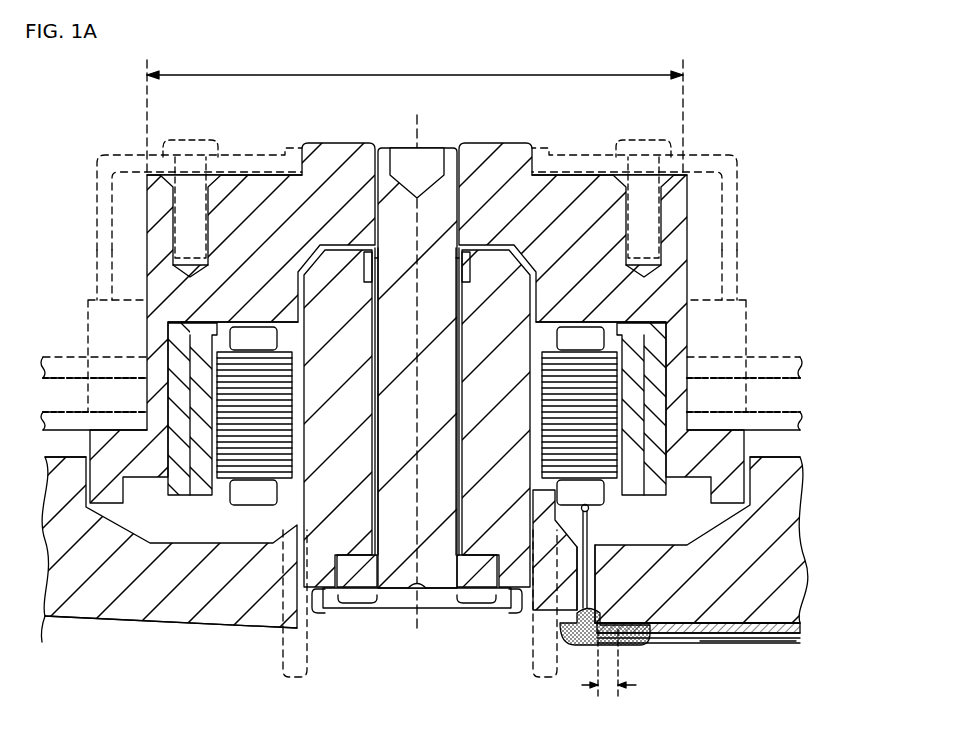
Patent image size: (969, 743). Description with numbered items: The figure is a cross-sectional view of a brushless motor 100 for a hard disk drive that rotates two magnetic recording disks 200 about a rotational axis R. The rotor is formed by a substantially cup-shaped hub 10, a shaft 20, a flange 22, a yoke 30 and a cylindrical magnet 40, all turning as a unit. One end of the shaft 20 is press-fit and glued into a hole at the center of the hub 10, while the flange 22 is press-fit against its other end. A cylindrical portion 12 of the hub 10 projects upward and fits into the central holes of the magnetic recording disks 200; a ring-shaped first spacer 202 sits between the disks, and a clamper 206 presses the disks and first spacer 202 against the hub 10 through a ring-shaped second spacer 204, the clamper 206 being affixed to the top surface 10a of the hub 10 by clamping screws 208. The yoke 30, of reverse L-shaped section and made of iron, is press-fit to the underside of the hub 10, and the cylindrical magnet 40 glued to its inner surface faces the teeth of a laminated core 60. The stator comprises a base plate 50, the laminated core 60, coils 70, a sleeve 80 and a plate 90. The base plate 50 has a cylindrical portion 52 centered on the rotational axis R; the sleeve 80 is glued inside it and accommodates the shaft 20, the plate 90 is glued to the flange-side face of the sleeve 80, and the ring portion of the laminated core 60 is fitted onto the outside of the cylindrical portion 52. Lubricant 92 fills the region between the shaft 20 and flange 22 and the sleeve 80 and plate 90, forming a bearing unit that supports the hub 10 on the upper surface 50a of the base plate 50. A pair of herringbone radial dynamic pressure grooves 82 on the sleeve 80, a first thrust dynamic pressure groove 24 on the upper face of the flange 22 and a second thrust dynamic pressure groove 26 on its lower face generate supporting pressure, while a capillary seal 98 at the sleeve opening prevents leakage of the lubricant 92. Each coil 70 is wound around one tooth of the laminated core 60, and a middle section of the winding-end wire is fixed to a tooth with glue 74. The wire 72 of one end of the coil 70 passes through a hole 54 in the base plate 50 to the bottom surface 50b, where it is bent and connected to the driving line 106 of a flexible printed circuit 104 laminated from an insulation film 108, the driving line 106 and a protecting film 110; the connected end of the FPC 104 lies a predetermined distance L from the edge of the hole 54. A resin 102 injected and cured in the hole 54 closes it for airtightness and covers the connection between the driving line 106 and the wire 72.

The hub 10 is at (333, 143).
The top surface of the hub 10a is at (246, 173).
The cylindrical portion of the hub 12 is at (297, 75).
The shaft 20 is at (390, 145).
The flange 22 is at (388, 580).
The first thrust dynamic pressure groove 24 is at (377, 551).
The second thrust dynamic pressure groove 26 is at (358, 604).
The yoke 30 is at (200, 352).
The cylindrical magnet 40 is at (175, 330).
The base plate 50 is at (62, 484).
The upper surface of the base plate 50a is at (78, 456).
The bottom surface of the base plate 50b is at (146, 623).
The cylindrical portion of the base plate 52 is at (283, 681).
The hole 54 is at (592, 579).
The laminated core 60 is at (228, 472).
The coils 70 is at (245, 330).
The wire of one end of the coil 72 is at (590, 547).
The glue 74 is at (589, 510).
The sleeve 80 is at (318, 613).
The radial dynamic pressure grooves 82 is at (382, 316).
The plate 90 is at (468, 600).
The lubricant 92 is at (372, 270).
The capillary seal 98 is at (384, 255).
The brushless motor 100 is at (416, 724).
The resin 102 is at (577, 646).
The Flexible Printed Circuit (FPC) 104 is at (698, 677).
The driving line 106 is at (688, 636).
The insulation film 108 is at (727, 638).
The protecting film 110 is at (660, 701).
The magnetic recording disks 200 is at (50, 430).
The first spacer 202 is at (108, 395).
The second spacer 204 is at (90, 326).
The clamper 206 is at (97, 212).
The clamping screws 208 is at (196, 143).
The rotational axis R is at (417, 369).
The predetermined distance L is at (607, 694).